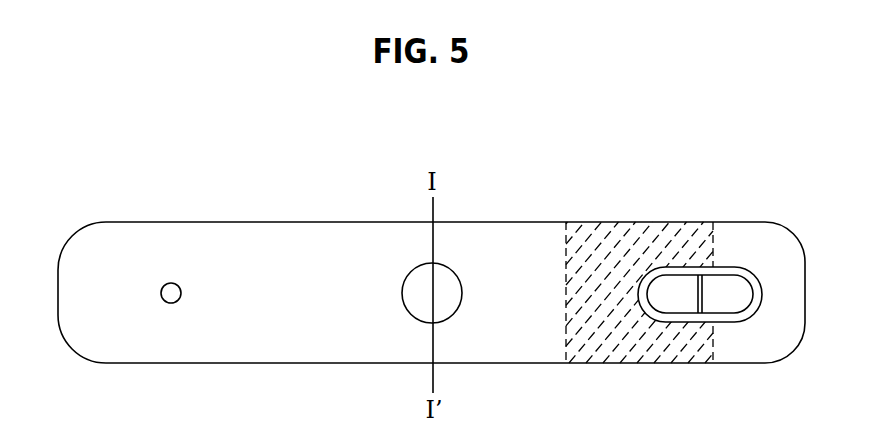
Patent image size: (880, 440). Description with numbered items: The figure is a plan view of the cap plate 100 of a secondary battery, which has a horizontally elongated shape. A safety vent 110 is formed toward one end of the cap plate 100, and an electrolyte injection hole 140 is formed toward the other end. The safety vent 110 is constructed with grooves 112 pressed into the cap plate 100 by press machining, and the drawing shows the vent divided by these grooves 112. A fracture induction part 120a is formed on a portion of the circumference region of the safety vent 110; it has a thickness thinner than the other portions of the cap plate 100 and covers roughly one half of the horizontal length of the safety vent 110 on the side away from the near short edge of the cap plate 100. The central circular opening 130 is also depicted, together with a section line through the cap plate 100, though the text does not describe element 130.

The cap plate 100 is at (295, 222).
The safety vent 110 is at (732, 283).
The grooves 112 is at (733, 312).
The fracture induction part 120a is at (612, 243).
The circular hole 130 is at (436, 266).
The electrolyte injection hole 140 is at (171, 283).